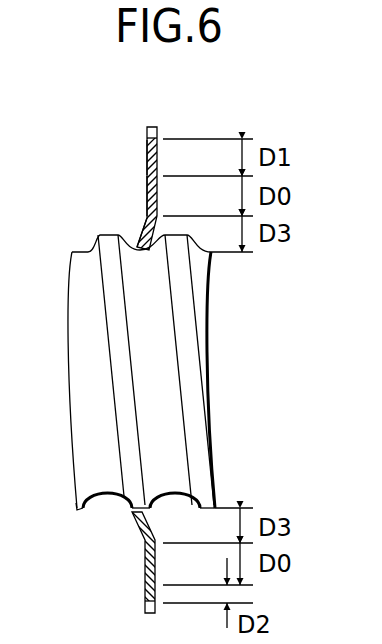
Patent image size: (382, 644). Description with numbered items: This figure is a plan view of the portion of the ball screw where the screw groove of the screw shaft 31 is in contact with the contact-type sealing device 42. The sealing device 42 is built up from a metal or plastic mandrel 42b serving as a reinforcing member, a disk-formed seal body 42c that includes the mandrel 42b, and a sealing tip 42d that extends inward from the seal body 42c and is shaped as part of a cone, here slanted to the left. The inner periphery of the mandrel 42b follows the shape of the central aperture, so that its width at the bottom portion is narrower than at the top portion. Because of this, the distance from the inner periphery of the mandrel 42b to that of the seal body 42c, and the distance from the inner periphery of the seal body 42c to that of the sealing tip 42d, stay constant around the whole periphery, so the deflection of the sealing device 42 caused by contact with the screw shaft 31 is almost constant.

The screw shaft 31 is at (208, 331).
The contact-type sealing device 42 is at (152, 127).
The mandrel 42b is at (147, 158).
The seal body 42c is at (147, 191).
The sealing tip 42d is at (144, 228).